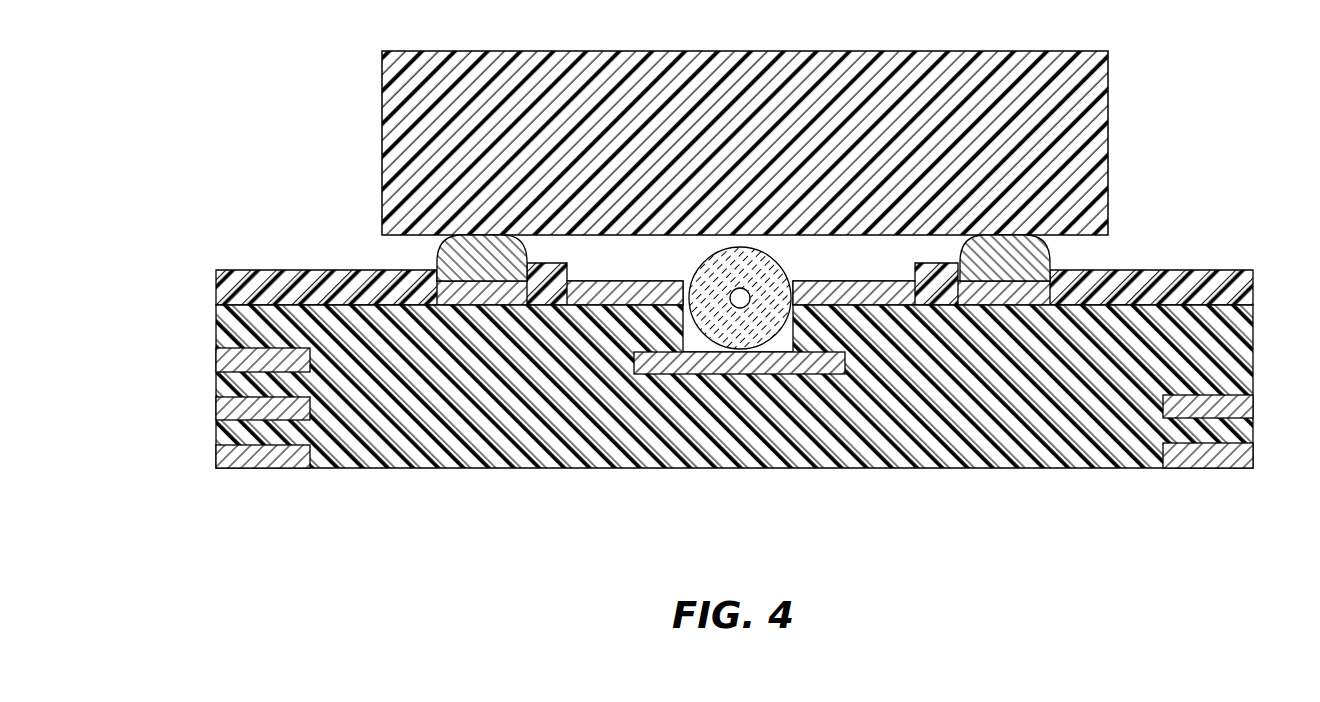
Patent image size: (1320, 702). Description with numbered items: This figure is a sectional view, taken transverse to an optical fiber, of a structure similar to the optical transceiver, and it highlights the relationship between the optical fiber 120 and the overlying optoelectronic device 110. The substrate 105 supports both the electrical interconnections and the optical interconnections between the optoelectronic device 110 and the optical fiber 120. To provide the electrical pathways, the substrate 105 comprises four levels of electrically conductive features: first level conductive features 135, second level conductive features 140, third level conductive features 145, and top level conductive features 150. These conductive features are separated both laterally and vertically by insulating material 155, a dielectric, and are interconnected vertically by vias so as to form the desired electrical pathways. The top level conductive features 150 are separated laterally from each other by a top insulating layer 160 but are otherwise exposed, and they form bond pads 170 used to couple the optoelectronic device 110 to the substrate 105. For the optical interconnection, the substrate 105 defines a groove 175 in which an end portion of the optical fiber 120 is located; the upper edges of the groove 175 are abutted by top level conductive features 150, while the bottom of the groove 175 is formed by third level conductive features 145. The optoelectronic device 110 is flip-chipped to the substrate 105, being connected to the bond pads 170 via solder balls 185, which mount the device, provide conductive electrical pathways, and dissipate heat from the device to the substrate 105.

The substrate 105 is at (695, 294).
The optoelectronic device 110 is at (1090, 130).
The optical fiber 120 is at (656, 387).
The first level conductive features 135 is at (196, 457).
The second level conductive features 140 is at (196, 409).
The third level conductive features 145 is at (196, 360).
The top level conductive features 150 is at (620, 292).
The insulating material 155 is at (978, 435).
The top insulating layer 160 is at (1182, 282).
The bond pad 170 is at (437, 266).
The groove 175 is at (684, 325).
The solder ball 185 is at (1025, 264).